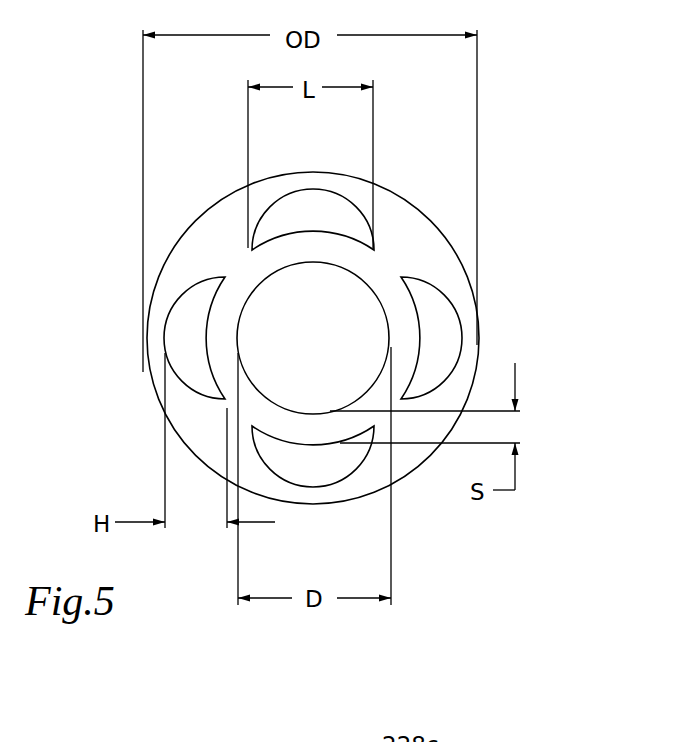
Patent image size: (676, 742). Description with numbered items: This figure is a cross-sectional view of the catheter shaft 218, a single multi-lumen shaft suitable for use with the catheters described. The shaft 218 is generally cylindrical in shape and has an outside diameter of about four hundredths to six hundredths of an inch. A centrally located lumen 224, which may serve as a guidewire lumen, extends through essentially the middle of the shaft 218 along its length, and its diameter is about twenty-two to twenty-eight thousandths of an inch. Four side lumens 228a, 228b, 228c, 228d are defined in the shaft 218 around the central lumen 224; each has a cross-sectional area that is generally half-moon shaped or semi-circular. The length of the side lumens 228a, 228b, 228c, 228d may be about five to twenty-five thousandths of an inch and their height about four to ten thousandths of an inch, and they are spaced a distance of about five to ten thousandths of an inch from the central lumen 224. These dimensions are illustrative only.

The shaft 218 is at (150, 213).
The centrally located lumen 224 is at (350, 292).
The side lumen 228a is at (329, 211).
The side lumen 228b is at (443, 359).
The side lumen 228c is at (335, 470).
The side lumen 228d is at (177, 322).